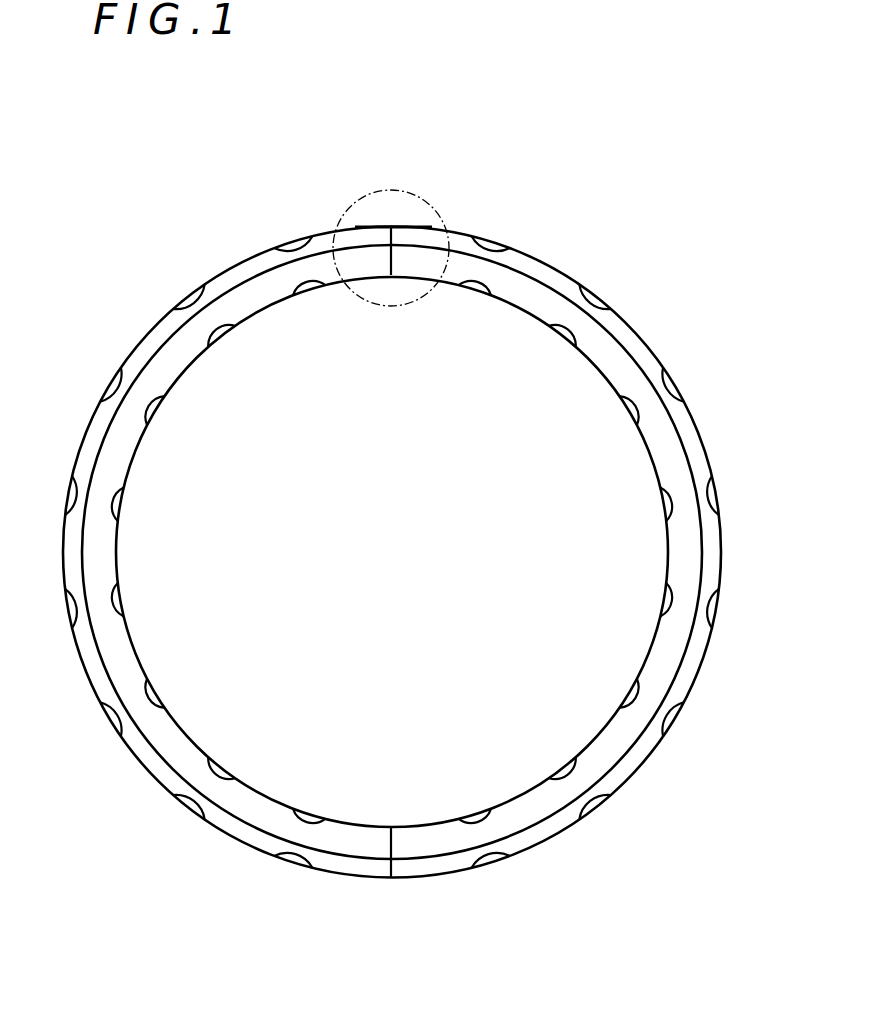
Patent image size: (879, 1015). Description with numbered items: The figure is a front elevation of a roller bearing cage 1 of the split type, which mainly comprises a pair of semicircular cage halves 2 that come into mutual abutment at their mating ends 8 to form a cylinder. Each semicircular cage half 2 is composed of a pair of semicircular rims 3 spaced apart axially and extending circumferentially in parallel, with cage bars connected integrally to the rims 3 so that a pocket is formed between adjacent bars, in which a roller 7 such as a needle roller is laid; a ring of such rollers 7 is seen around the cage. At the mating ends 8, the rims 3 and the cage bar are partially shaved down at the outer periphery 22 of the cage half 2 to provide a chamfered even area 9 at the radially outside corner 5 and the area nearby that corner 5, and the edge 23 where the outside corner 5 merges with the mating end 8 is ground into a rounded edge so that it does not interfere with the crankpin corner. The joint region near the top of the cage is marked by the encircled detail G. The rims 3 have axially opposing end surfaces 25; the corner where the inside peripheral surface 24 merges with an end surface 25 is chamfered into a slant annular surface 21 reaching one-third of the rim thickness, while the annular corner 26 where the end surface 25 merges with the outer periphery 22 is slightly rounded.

The roller bearing cage 1 is at (553, 250).
The semicircular cage halves 2 is at (117, 438).
The semicircular rims 3 is at (87, 650).
The radially outside corner 5 is at (384, 227).
The roller 7 is at (271, 233).
The mating ends 8 is at (389, 237).
The chamfered even area 9 is at (372, 227).
The slant annular surface 21 is at (178, 353).
The outer periphery 22 is at (90, 687).
The edge 23 is at (389, 238).
The radially inside surface 24 is at (137, 652).
The axially opposing end surfaces 25 is at (635, 342).
The annular corner 26 is at (62, 545).
The enlarged detail region G is at (440, 210).